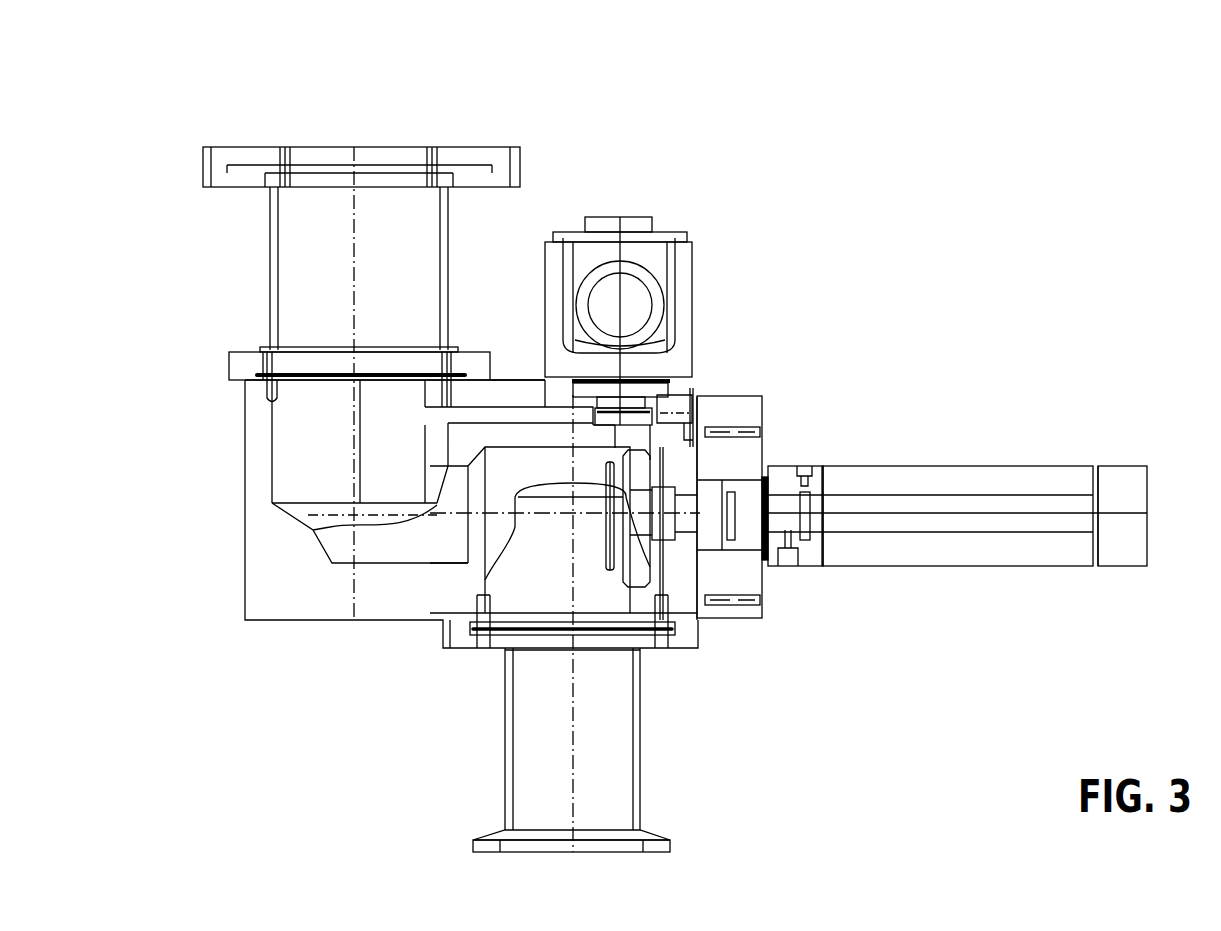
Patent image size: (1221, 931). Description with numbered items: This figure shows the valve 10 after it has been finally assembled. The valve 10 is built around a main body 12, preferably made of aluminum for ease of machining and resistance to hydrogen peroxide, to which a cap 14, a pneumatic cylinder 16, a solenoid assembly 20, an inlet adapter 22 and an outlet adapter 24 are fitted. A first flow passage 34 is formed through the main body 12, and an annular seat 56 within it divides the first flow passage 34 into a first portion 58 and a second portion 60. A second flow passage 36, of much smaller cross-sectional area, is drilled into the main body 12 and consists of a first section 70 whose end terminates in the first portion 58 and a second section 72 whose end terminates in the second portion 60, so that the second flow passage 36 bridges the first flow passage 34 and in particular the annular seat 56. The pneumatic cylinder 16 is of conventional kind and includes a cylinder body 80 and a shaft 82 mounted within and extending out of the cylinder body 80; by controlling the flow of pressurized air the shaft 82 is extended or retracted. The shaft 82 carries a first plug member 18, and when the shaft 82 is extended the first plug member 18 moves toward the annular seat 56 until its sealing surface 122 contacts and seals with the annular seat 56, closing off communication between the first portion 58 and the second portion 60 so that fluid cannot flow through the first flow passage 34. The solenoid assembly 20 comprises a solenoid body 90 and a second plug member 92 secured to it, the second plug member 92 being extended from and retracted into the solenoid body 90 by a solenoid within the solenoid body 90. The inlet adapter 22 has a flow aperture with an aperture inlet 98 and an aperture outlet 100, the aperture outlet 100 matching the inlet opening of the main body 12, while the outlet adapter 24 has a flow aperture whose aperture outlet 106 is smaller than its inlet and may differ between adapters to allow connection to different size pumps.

The valve 10 is at (245, 80).
The main body 12 is at (322, 618).
The cap 14 is at (736, 618).
The pneumatic cylinder 16 is at (915, 566).
The first plug member 18 is at (572, 547).
The solenoid assembly 20 is at (692, 270).
The inlet adapter 22 is at (472, 252).
The outlet adapter 24 is at (640, 732).
The first flow passage 34 is at (517, 501).
The second flow passage 36 is at (503, 412).
The annular seat 56 is at (480, 460).
The first portion 58 is at (418, 418).
The second portion 60 is at (608, 462).
The first section 70 is at (540, 415).
The second section 72 is at (622, 425).
The cylinder body 80 is at (920, 470).
The shaft 82 is at (680, 545).
The solenoid body 90 is at (692, 300).
The second plug member 92 is at (660, 410).
The aperture inlet 98 is at (400, 147).
The aperture outlet 100 is at (326, 375).
The aperture outlet 106 is at (634, 853).
The sealing surface 122 is at (612, 568).